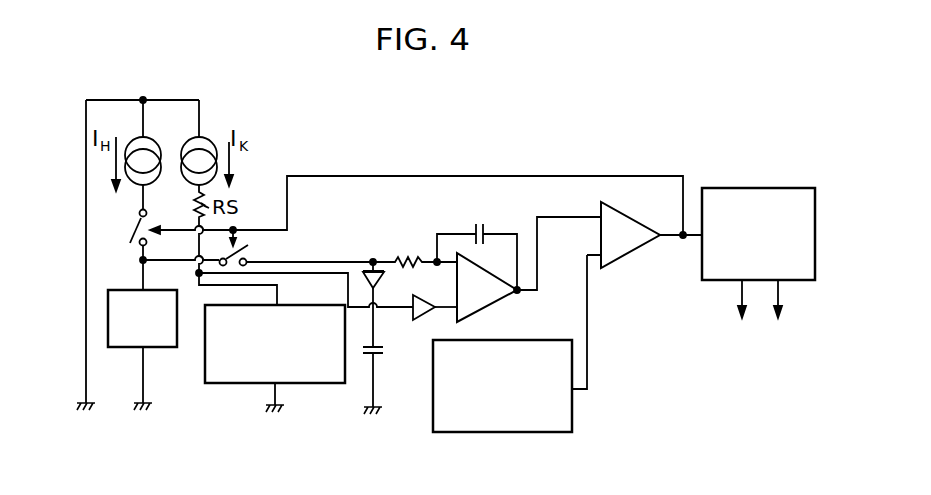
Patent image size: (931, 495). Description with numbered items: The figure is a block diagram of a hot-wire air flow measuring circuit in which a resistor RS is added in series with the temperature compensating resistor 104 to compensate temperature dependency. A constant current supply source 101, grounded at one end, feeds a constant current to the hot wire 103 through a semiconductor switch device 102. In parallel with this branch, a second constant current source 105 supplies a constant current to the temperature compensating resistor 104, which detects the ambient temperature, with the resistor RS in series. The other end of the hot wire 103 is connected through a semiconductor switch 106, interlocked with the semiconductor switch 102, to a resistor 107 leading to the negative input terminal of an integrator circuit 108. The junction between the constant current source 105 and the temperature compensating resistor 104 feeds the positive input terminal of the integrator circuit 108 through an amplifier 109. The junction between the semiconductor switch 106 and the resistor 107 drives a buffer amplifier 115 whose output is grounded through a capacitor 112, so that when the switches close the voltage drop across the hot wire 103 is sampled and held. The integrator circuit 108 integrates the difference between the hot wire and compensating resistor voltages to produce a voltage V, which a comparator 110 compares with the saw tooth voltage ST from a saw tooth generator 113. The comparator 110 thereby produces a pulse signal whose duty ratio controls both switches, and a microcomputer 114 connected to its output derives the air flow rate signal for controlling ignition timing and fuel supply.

The constant current supply source 101 is at (146, 134).
The semiconductor switch device 102 is at (135, 226).
The hot wire 103 is at (123, 348).
The temperature compensating resistor 104 is at (205, 350).
The constant current source 105 is at (210, 137).
The semiconductor switch 106 is at (250, 247).
The resistor 107 is at (403, 257).
The integrator circuit 108 is at (468, 253).
The amplifier 109 is at (421, 322).
The comparator 110 is at (628, 258).
The capacitor 112 is at (384, 354).
The saw tooth generator 113 is at (572, 429).
The microcomputer 114 is at (744, 188).
The buffer amplifier 115 is at (371, 265).